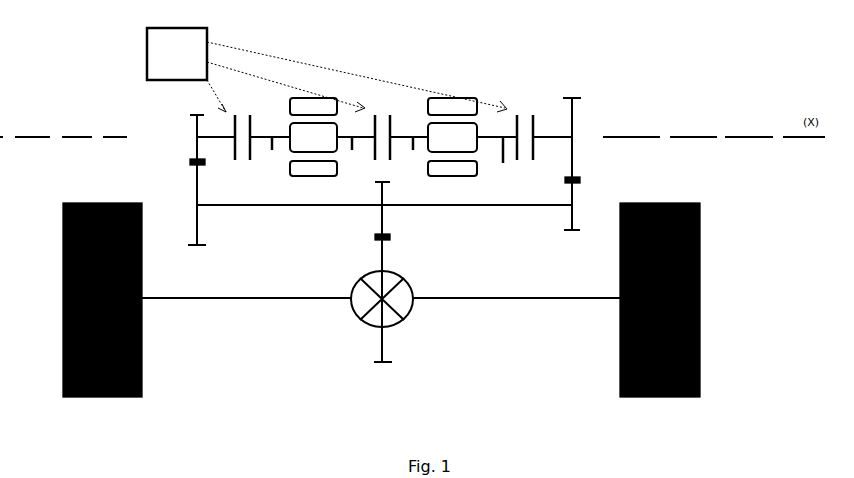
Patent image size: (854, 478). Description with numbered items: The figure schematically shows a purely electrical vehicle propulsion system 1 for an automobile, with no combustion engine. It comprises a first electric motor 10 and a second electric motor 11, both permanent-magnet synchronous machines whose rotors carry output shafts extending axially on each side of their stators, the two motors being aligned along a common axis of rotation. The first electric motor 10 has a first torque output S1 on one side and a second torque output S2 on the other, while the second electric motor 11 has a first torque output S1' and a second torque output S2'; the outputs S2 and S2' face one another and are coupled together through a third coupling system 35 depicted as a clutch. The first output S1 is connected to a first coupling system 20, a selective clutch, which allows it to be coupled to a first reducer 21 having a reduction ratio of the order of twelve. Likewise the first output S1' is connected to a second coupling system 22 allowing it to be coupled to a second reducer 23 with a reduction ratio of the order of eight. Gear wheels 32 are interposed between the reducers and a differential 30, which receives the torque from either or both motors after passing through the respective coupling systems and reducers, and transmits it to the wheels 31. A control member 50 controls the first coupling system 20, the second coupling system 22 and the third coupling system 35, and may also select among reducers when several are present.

The vehicle propulsion system 1 is at (652, 115).
The first electric motor 10 is at (307, 130).
The second electric motor 11 is at (458, 135).
The first coupling system 20 is at (251, 120).
The first reducer 21 is at (178, 168).
The second coupling system 22 is at (529, 117).
The second reducer 23 is at (588, 133).
The differential 30 is at (392, 313).
The wheels 31 is at (63, 208).
The gear wheel 32 is at (385, 235).
The third coupling system 35 is at (387, 123).
The control member 50 is at (175, 50).
The first torque output of the first electric motor S1 is at (266, 155).
The second torque output of the first electric motor S2 is at (353, 157).
The first torque output of the second electric motor S1' is at (505, 163).
The second torque output of the second electric motor S2' is at (410, 158).